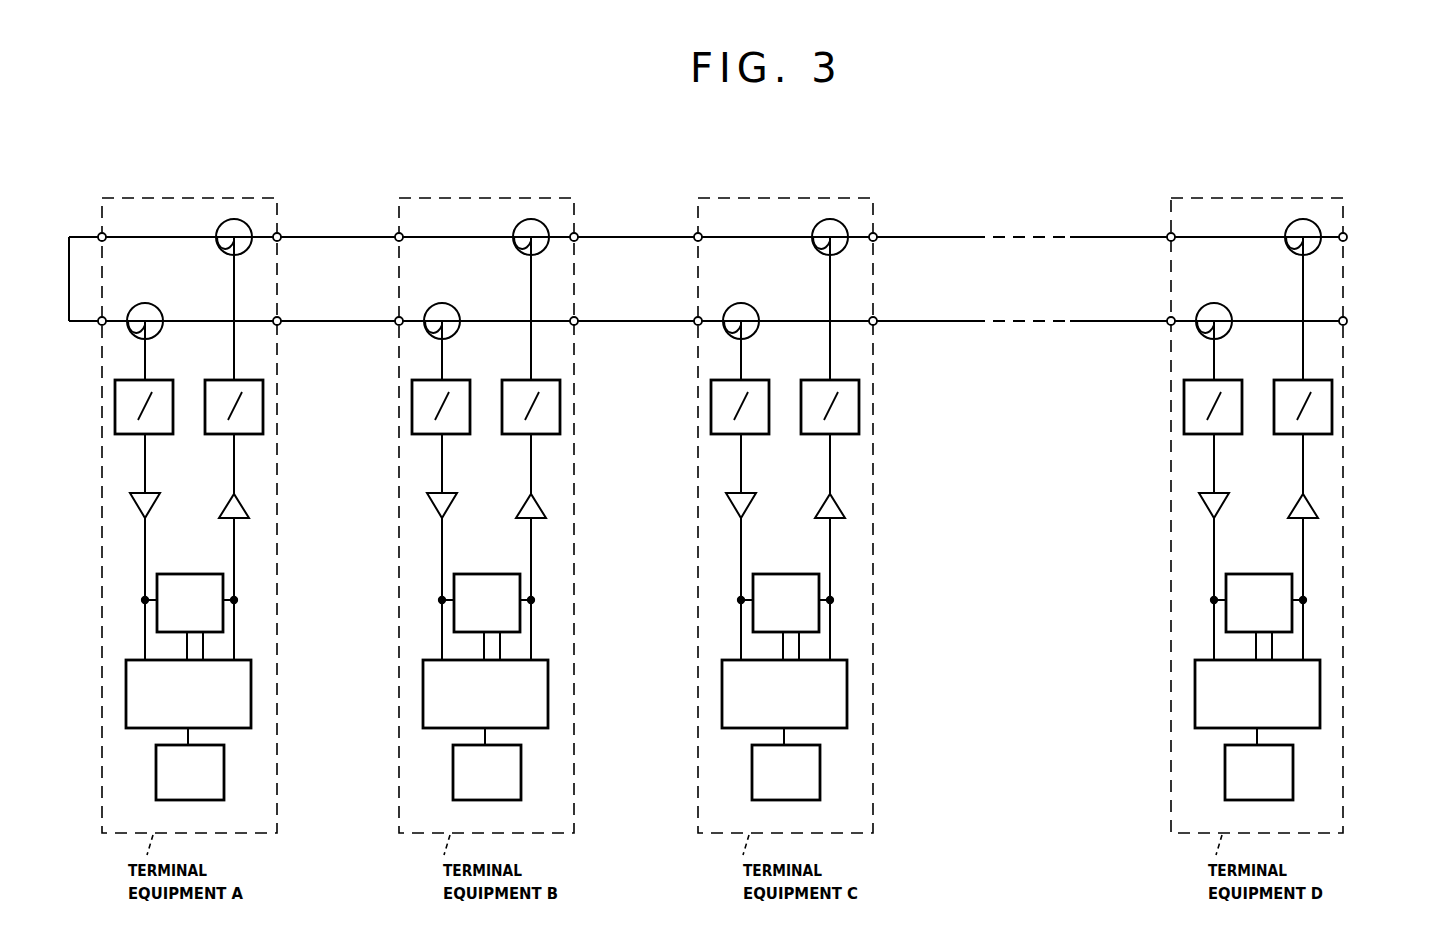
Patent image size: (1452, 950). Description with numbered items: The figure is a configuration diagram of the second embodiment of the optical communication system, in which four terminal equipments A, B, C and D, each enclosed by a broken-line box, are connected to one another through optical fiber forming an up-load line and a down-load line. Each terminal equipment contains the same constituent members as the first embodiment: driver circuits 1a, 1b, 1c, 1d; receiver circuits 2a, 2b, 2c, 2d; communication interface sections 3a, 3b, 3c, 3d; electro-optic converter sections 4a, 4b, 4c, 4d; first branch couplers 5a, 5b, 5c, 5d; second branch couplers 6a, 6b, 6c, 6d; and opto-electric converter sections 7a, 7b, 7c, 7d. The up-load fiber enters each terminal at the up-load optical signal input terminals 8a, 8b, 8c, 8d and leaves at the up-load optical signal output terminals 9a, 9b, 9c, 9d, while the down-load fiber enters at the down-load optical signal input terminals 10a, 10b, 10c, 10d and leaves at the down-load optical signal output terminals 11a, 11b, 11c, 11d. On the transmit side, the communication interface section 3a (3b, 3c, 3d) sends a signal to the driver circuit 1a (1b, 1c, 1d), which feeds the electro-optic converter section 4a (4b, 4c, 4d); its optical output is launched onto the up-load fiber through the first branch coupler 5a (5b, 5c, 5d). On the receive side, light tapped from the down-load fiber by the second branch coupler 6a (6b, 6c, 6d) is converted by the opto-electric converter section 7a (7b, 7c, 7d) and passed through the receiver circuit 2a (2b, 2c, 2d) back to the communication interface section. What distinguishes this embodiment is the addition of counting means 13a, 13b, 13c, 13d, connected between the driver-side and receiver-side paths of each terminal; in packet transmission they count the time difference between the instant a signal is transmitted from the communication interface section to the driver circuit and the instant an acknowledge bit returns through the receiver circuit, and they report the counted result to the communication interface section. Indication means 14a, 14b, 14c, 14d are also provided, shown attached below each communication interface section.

The driver circuit 1a is at (249, 508).
The driver circuit 1b is at (546, 508).
The driver circuit 1c is at (845, 508).
The driver circuit 1d is at (1319, 508).
The receiver circuit 2a is at (135, 505).
The receiver circuit 2b is at (432, 505).
The receiver circuit 2c is at (732, 505).
The receiver circuit 2d is at (1210, 505).
The communication interface section 3a is at (126, 696).
The communication interface section 3b is at (423, 696).
The communication interface section 3c is at (722, 696).
The communication interface section 3d is at (1196, 696).
The electro-optic converter section 4a is at (263, 405).
The electro-optic converter section 4b is at (560, 405).
The electro-optic converter section 4c is at (859, 405).
The electro-optic converter section 4d is at (1333, 405).
The first branch coupler 5a is at (234, 220).
The first branch coupler 5b is at (531, 220).
The first branch coupler 5c is at (830, 220).
The first branch coupler 5d is at (1304, 220).
The second branch coupler 6a is at (133, 340).
The second branch coupler 6b is at (430, 340).
The second branch coupler 6c is at (729, 340).
The second branch coupler 6d is at (1203, 340).
The opto-electric converter section 7a is at (114, 405).
The opto-electric converter section 7b is at (411, 405).
The opto-electric converter section 7c is at (710, 405).
The opto-electric converter section 7d is at (1185, 420).
The up-load optical signal input terminal 8a is at (278, 233).
The up-load optical signal input terminal 8b is at (576, 235).
The up-load optical signal input terminal 8c is at (875, 235).
The up-load optical signal input terminal 8d is at (1345, 235).
The up-load optical signal output terminal 9a is at (101, 233).
The up-load optical signal output terminal 9b is at (398, 235).
The up-load optical signal output terminal 9c is at (699, 235).
The up-load optical signal output terminal 9d is at (1171, 235).
The down-load optical signal input terminal 10a is at (100, 325).
The down-load optical signal input terminal 10b is at (398, 325).
The down-load optical signal input terminal 10c is at (699, 325).
The down-load optical signal input terminal 10d is at (1171, 325).
The down-load optical signal output terminal 11a is at (278, 318).
The down-load optical signal output terminal 11b is at (575, 325).
The down-load optical signal output terminal 11c is at (875, 325).
The down-load optical signal output terminal 11d is at (1346, 322).
The counting means 13a is at (234, 592).
The counting means 13b is at (531, 590).
The counting means 13c is at (830, 590).
The counting means 13d is at (1300, 590).
The indication means 14a is at (224, 772).
The indication means 14b is at (521, 772).
The indication means 14c is at (820, 772).
The indication means 14d is at (1294, 772).